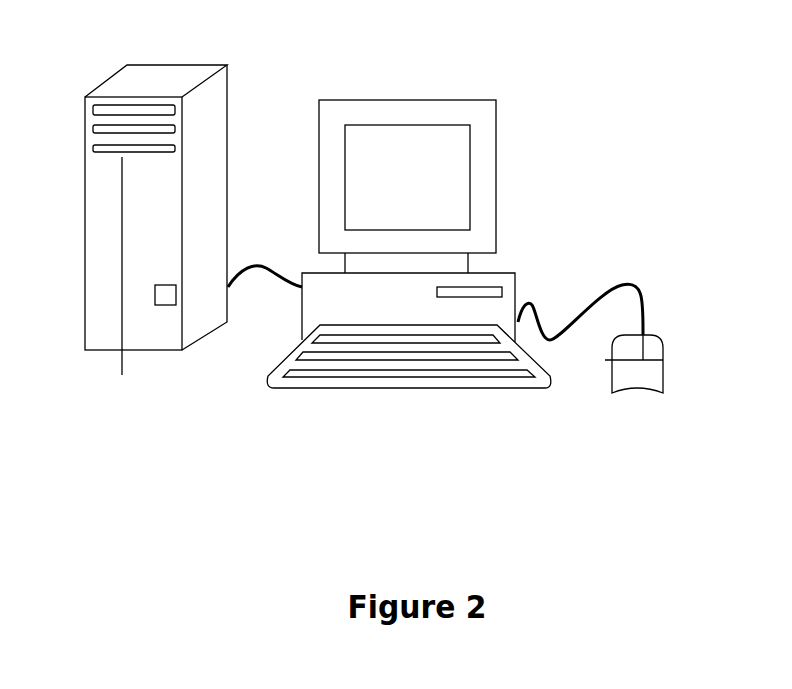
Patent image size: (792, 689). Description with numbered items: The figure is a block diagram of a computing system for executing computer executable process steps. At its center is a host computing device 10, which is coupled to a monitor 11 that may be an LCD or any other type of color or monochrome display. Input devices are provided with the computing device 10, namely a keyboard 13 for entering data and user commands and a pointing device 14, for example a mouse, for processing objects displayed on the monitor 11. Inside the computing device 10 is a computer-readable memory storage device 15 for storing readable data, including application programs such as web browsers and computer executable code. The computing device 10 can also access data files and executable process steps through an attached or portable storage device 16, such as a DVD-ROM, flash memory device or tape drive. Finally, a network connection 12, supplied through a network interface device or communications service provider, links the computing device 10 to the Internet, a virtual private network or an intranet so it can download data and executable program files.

The host computing device 10 is at (496, 118).
The monitor 11 is at (450, 195).
The network connection 12 is at (157, 338).
The keyboard 13 is at (448, 387).
The pointing device 14 is at (643, 375).
The computer-readable memory storage device 15 is at (157, 117).
The portable storage device 16 is at (103, 291).